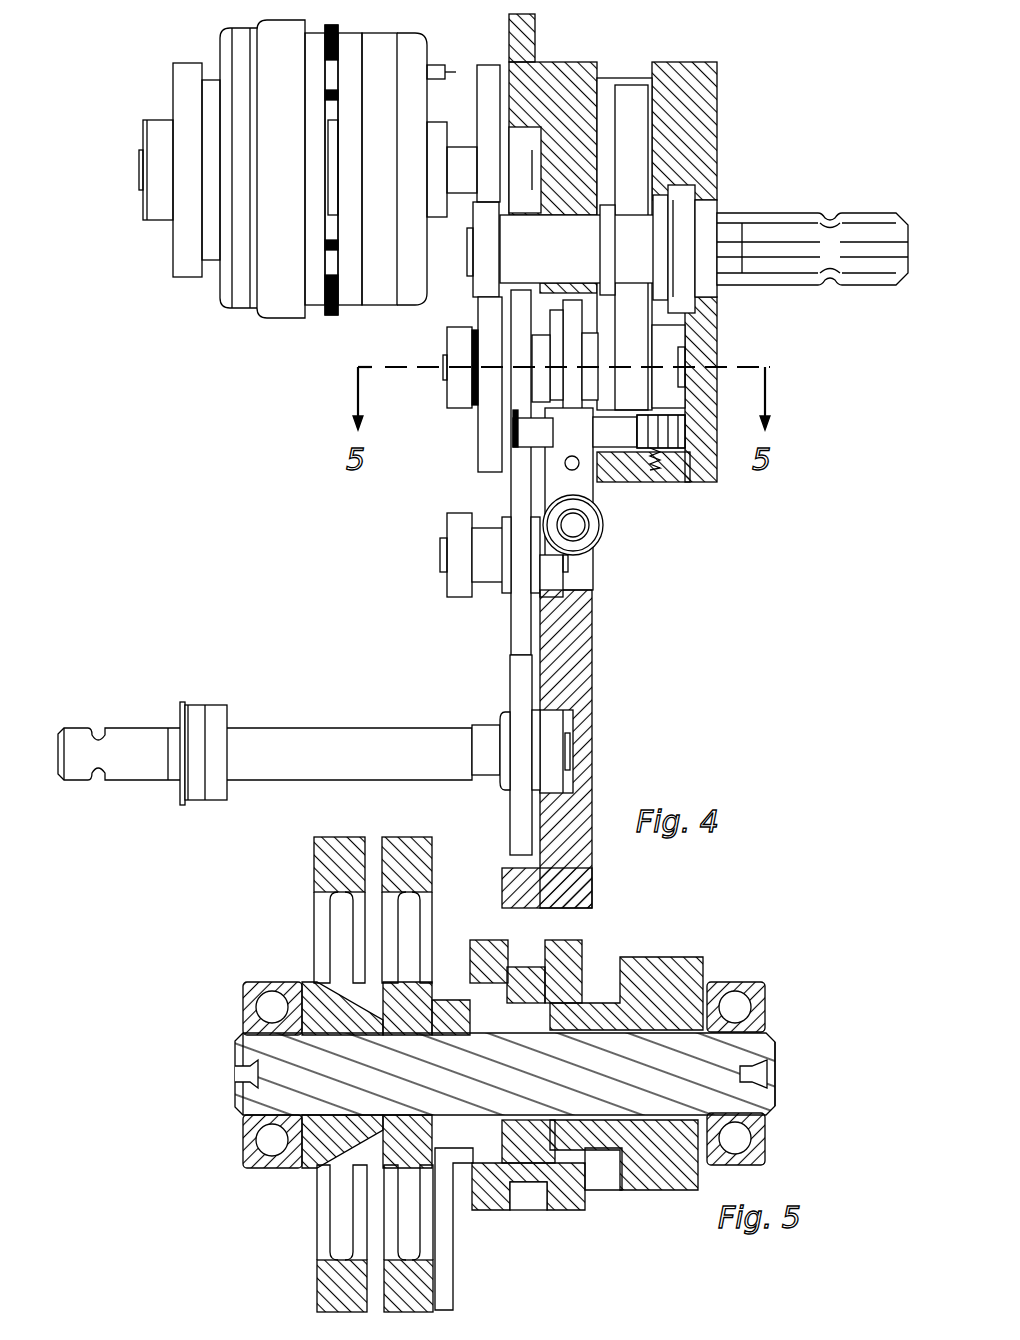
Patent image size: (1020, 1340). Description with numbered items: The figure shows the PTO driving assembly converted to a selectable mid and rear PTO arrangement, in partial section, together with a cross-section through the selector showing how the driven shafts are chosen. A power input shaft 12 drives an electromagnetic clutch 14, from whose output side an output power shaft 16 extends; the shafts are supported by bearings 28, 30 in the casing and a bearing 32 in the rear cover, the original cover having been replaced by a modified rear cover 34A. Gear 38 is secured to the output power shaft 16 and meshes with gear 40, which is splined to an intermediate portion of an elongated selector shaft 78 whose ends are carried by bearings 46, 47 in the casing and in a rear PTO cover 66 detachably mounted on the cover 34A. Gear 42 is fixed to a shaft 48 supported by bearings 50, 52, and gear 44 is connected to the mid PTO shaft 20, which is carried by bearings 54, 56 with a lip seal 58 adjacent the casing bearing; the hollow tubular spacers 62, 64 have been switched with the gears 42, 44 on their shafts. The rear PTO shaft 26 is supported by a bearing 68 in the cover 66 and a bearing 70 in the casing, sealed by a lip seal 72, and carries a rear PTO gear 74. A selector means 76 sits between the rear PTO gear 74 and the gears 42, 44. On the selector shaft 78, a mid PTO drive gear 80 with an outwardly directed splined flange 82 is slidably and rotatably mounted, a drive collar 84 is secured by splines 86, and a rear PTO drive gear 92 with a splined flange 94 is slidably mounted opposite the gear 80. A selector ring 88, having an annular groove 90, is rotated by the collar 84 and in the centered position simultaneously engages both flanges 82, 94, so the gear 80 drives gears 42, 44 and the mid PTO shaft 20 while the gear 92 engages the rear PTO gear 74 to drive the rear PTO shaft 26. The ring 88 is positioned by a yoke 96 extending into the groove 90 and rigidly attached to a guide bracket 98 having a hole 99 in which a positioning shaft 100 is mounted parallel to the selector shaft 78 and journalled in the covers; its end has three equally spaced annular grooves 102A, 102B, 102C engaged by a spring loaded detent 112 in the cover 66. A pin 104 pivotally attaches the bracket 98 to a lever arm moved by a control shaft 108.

In FIG. 4, the power input shaft 12 is at (178, 140).
In FIG. 4, the electromagnetic clutch 14 is at (225, 318).
In FIG. 4, the output power shaft 16 is at (440, 125).
In FIG. 4, the mid PTO shaft 20 is at (118, 728).
In FIG. 4, the rear PTO shaft 26 is at (770, 213).
In FIG. 4, the bearing 28 is at (152, 232).
In FIG. 4, the bearing 30 is at (433, 65).
In FIG. 4, the bearing 32 is at (522, 200).
In FIG. 4, the modified rear cover 34A is at (568, 65).
In FIG. 4, the gear 38 is at (493, 70).
In FIG. 4, the gear 40 is at (478, 305).
In FIG. 5, the gear 40 is at (318, 1300).
In FIG. 4, the gear 42 is at (512, 480).
In FIG. 4, the gear 44 is at (510, 670).
In FIG. 4, the bearing 46 is at (455, 395).
In FIG. 5, the bearing 46 is at (245, 1000).
In FIG. 4, the bearing 47 is at (700, 325).
In FIG. 5, the bearing 47 is at (735, 982).
In FIG. 4, the shaft 48 is at (442, 555).
In FIG. 4, the bearing 50 is at (458, 513).
In FIG. 4, the bearing 52 is at (560, 580).
In FIG. 4, the bearing 54 is at (205, 800).
In FIG. 4, the bearing 56 is at (565, 722).
In FIG. 4, the lip seal 58 is at (182, 805).
In FIG. 4, the hollow tubular spacer 62 is at (488, 585).
In FIG. 4, the hollow tubular spacer 64 is at (490, 775).
In FIG. 4, the rear PTO cover 66 is at (690, 62).
In FIG. 4, the bearing 68 is at (708, 300).
In FIG. 4, the bearing 70 is at (468, 245).
In FIG. 4, the lip seal 72 is at (712, 208).
In FIG. 4, the rear PTO gear 74 is at (630, 130).
In FIG. 4, the selector means 76 is at (603, 525).
In FIG. 4, the selector shaft 78 is at (445, 367).
In FIG. 5, the selector shaft 78 is at (238, 1060).
In FIG. 4, the mid PTO drive gear 80 is at (474, 370).
In FIG. 5, the mid PTO drive gear 80 is at (433, 1290).
In FIG. 5, the splined flange 82 is at (470, 1175).
In FIG. 5, the drive collar 84 is at (525, 1160).
In FIG. 5, the splines 86 is at (530, 1160).
In FIG. 4, the selector ring 88 is at (592, 300).
In FIG. 5, the selector ring 88 is at (575, 1170).
In FIG. 5, the annular groove 90 is at (510, 1195).
In FIG. 5, the rear PTO drive gear 92 is at (650, 1195).
In FIG. 5, the splined flange 94 is at (590, 1200).
In FIG. 4, the selector arm or yoke 96 is at (575, 355).
In FIG. 4, the guide bracket 98 is at (595, 420).
In FIG. 4, the hole 99 is at (520, 430).
In FIG. 4, the positioning shaft 100 is at (535, 432).
In FIG. 4, the annular groove 102A is at (640, 450).
In FIG. 4, the annular groove 102B is at (660, 430).
In FIG. 4, the annular groove 102C is at (685, 445).
In FIG. 4, the pin 104 is at (565, 460).
In FIG. 4, the control shaft 108 is at (578, 530).
In FIG. 4, the spring loaded ball or detent 112 is at (660, 465).